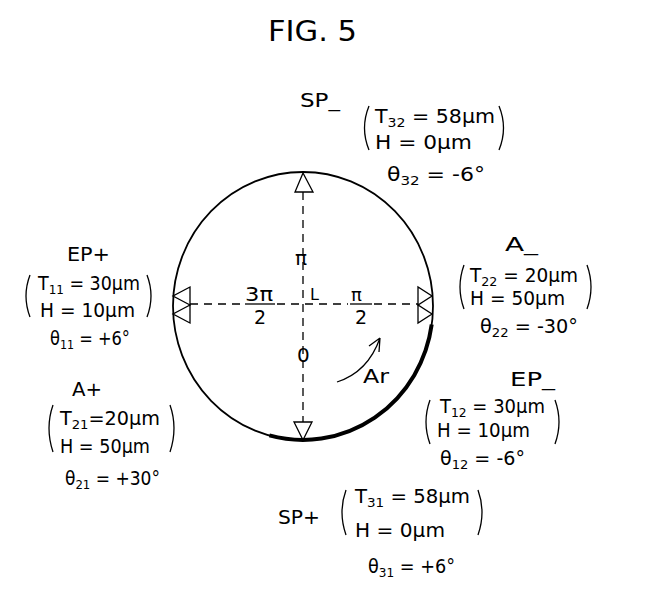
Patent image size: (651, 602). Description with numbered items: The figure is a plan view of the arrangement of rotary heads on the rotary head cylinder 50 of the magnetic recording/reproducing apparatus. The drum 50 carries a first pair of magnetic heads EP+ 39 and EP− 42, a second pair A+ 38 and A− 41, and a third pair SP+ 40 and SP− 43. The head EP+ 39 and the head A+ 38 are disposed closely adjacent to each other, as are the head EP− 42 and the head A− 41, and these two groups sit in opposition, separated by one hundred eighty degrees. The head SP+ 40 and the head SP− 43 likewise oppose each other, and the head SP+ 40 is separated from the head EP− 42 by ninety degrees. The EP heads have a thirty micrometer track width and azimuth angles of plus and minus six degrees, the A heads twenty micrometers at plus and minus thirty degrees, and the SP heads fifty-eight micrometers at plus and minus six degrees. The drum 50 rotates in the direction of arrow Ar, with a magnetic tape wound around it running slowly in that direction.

The rotary head cylinder 50 is at (242, 207).
The magnetic head SP− 43 is at (313, 173).
The magnetic head EP+ 39 is at (176, 288).
The magnetic head A+ 38 is at (176, 322).
The magnetic head A− 41 is at (433, 288).
The magnetic head EP− 42 is at (434, 324).
The magnetic head SP+ 40 is at (297, 442).